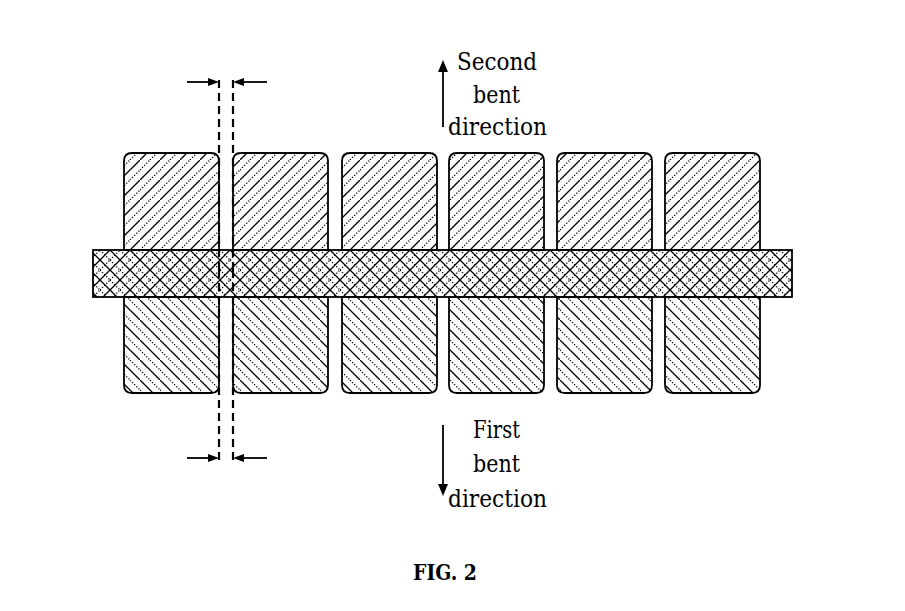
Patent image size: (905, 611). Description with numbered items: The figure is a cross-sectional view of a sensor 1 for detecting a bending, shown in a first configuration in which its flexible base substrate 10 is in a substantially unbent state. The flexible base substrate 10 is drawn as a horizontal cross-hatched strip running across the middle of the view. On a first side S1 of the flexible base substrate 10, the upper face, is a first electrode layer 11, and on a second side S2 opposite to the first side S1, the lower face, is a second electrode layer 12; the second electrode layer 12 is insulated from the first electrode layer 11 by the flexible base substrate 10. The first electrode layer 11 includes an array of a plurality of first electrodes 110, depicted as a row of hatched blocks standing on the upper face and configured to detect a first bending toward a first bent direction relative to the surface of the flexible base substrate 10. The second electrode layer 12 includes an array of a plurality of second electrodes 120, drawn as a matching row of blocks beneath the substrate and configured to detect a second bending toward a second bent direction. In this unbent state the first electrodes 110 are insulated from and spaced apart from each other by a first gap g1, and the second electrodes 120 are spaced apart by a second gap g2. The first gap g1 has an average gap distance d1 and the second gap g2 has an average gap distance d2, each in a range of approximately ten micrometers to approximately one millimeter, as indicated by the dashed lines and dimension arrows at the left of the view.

The sensor 1 is at (587, 137).
The flexible base substrate 10 is at (792, 273).
The first electrode layer 11 is at (783, 203).
The second electrode layer 12 is at (783, 348).
The first electrodes 110 is at (442, 201).
The second electrodes 120 is at (442, 345).
The first gap g1 is at (227, 190).
The second gap g2 is at (227, 347).
The average gap distance of the first gap d1 is at (229, 68).
The average gap distance of the second gap d2 is at (229, 471).
The first side S1 is at (44, 230).
The second side S2 is at (44, 324).